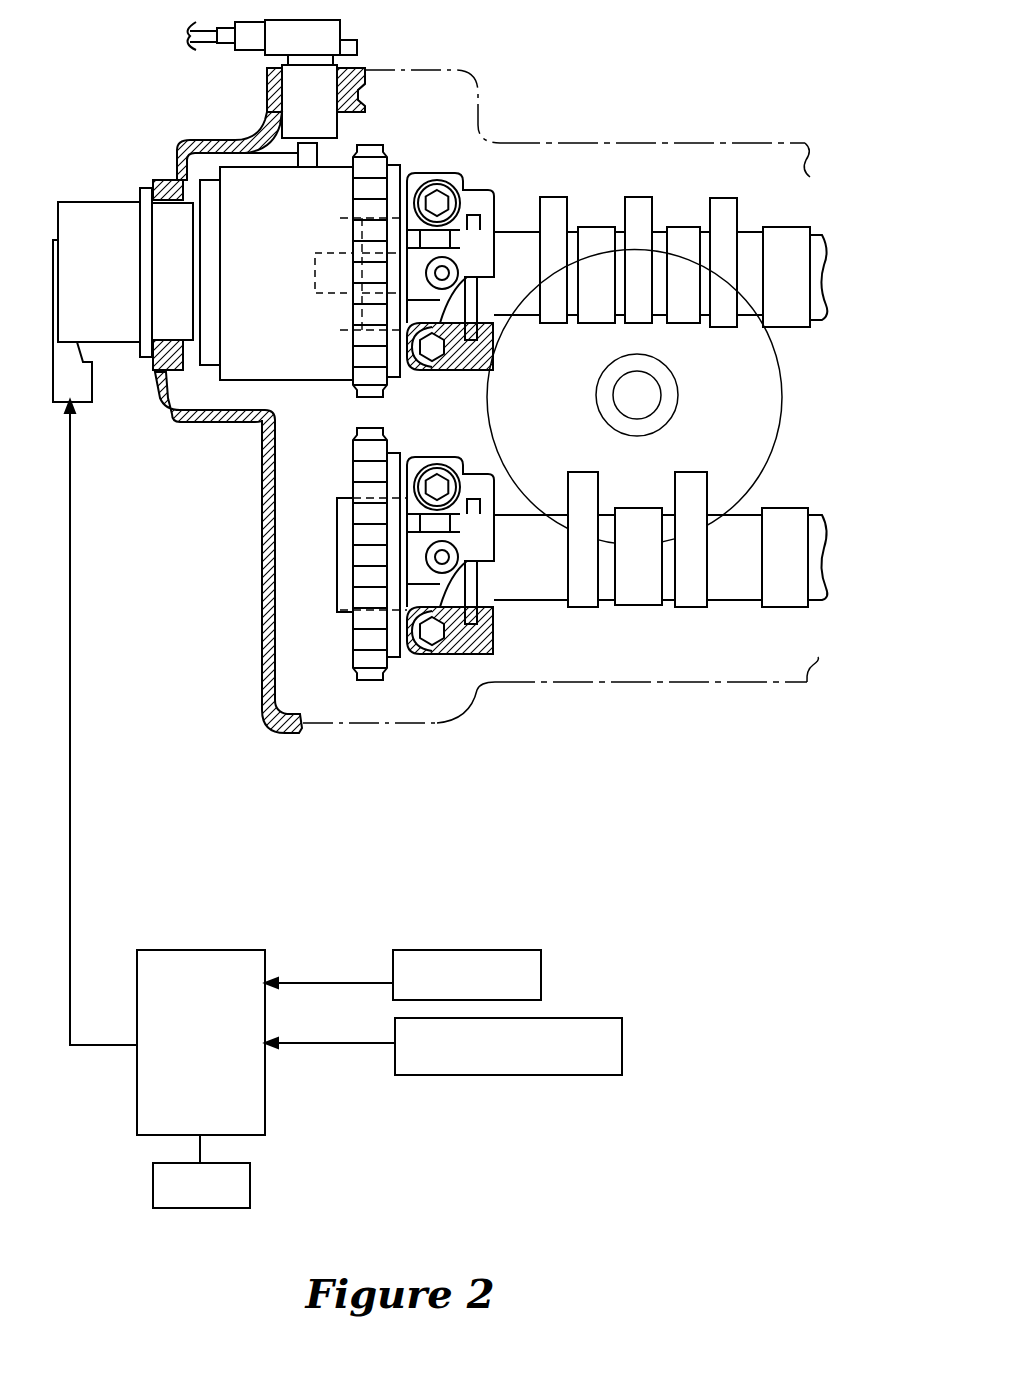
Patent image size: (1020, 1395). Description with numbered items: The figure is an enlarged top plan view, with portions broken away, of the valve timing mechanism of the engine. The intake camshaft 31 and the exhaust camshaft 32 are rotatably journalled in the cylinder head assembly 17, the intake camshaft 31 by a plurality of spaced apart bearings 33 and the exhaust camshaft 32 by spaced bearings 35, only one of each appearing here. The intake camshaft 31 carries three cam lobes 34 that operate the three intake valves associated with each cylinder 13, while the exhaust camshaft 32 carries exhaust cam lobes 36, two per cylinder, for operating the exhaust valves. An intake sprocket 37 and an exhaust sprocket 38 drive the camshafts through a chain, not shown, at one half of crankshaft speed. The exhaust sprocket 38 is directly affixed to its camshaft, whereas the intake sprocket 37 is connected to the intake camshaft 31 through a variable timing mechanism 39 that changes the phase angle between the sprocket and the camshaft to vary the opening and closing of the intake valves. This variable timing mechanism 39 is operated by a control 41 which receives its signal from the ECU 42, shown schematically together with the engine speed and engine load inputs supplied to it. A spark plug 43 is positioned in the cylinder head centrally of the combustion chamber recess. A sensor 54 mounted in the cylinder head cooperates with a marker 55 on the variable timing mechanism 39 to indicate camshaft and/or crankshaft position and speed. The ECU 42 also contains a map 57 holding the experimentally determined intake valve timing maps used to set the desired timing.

The cylinder 13 is at (780, 382).
The cylinder head assembly 17 is at (600, 688).
The intake camshaft 31 is at (827, 257).
The exhaust camshaft 32 is at (823, 555).
The bearings 33 is at (490, 143).
The cam lobes 34 is at (553, 197).
The bearings 35 is at (467, 653).
The exhaust cam lobes 36 is at (685, 607).
The intake sprocket 37 is at (373, 145).
The exhaust sprocket 38 is at (373, 682).
The variable timing mechanism 39 is at (288, 212).
The control 41 is at (95, 215).
The ECU 42 is at (207, 950).
The spark plug 43 is at (655, 413).
The sensor 54 is at (313, 88).
The marker 55 is at (290, 150).
The map 57 is at (250, 1185).